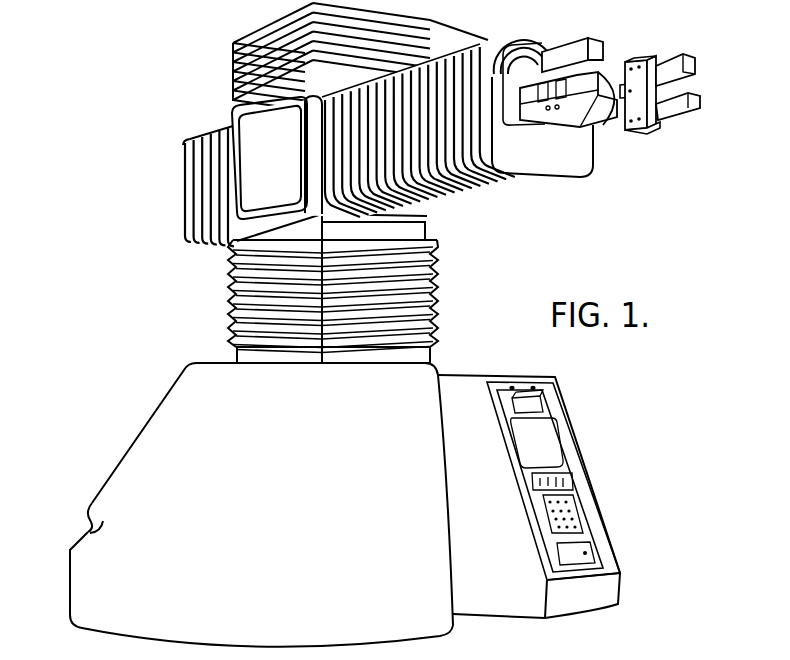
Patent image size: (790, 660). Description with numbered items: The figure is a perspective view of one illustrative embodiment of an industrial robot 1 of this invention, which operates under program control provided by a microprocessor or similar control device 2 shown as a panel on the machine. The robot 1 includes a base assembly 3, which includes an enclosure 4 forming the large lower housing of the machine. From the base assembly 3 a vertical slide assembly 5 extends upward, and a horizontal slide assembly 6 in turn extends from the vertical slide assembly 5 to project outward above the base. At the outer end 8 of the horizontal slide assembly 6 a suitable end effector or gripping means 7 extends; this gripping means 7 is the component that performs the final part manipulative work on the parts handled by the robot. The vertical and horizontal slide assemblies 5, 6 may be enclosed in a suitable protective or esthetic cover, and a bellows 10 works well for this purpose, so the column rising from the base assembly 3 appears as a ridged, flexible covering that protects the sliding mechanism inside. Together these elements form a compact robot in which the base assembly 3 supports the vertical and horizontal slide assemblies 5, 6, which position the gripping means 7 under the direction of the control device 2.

The industrial robot 1 is at (634, 227).
The control device 2 is at (600, 513).
The base assembly 3 is at (100, 401).
The enclosure 4 is at (87, 520).
The vertical slide assembly 5 is at (432, 256).
The horizontal slide assembly 6 is at (443, 56).
The gripping means 7 is at (600, 37).
The end of the horizontal slide assembly 8 is at (596, 152).
The bellows 10 is at (233, 284).